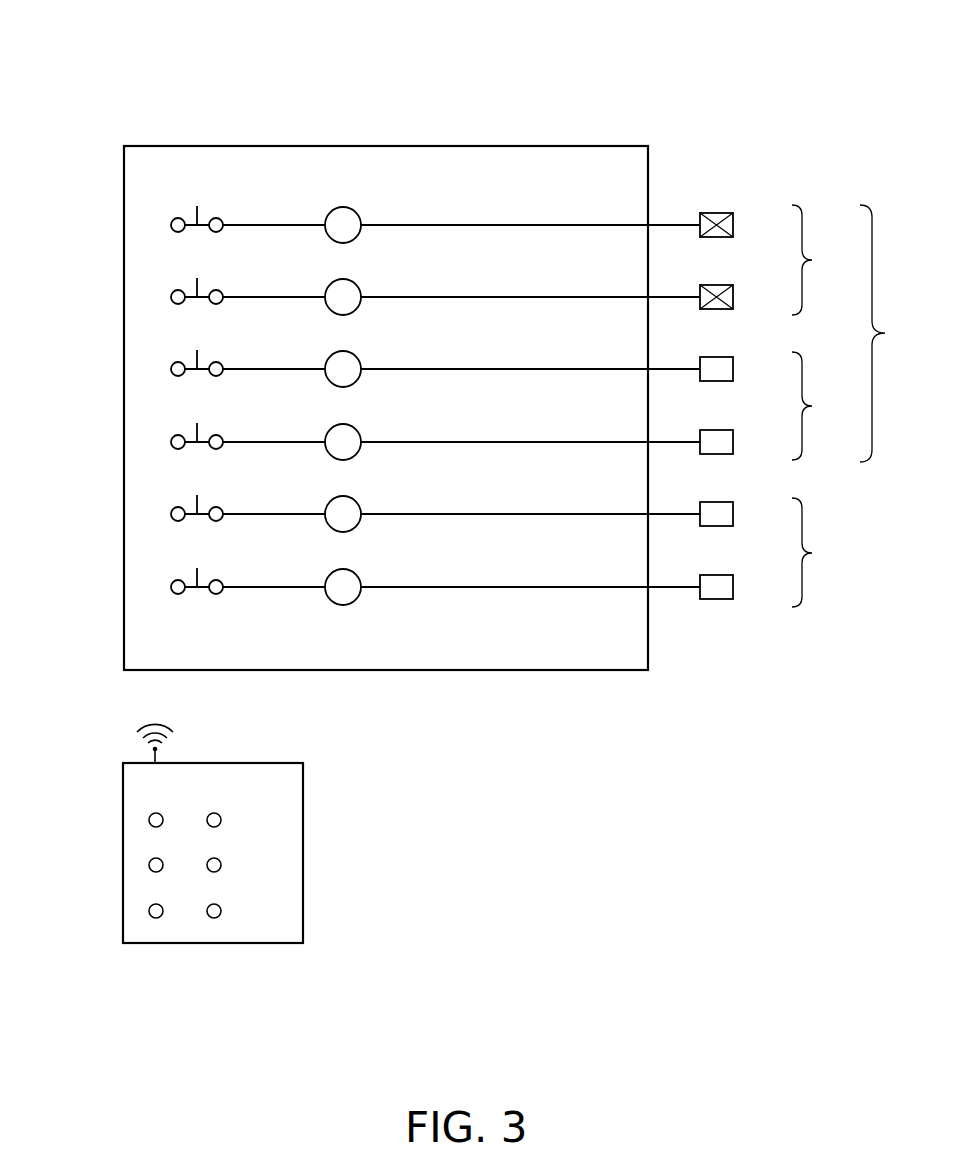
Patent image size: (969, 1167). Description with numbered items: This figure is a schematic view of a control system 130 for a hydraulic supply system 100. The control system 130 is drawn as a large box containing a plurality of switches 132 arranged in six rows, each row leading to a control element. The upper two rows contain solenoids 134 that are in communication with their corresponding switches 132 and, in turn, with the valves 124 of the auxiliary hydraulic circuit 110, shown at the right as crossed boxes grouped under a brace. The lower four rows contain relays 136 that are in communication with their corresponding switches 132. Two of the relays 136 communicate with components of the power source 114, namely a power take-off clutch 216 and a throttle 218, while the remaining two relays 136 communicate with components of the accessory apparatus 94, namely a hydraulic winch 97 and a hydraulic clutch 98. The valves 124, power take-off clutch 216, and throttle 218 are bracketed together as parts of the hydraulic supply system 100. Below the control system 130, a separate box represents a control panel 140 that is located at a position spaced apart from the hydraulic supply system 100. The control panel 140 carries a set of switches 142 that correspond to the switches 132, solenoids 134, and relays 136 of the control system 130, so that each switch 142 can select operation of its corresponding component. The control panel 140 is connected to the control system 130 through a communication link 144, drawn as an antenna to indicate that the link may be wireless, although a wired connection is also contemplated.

The control system 130 is at (590, 68).
The switches 132 is at (190, 215).
The solenoids 134 is at (359, 285).
The relays 136 is at (357, 381).
The valves 124 is at (736, 229).
The power take-off clutch 216 is at (736, 373).
The throttle 218 is at (736, 446).
The hydraulic winch 97 is at (736, 518).
The hydraulic clutch 98 is at (736, 591).
The auxiliary hydraulic circuit 110 is at (825, 260).
The power source 114 is at (832, 406).
The accessory apparatus 94 is at (818, 552).
The hydraulic supply system 100 is at (897, 333).
The control panel 140 is at (357, 838).
The switches 142 is at (148, 818).
The communication link 144 is at (138, 726).